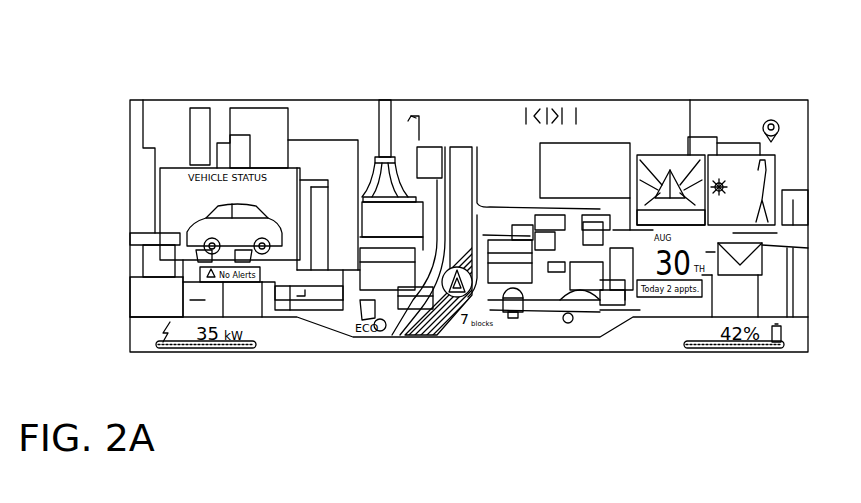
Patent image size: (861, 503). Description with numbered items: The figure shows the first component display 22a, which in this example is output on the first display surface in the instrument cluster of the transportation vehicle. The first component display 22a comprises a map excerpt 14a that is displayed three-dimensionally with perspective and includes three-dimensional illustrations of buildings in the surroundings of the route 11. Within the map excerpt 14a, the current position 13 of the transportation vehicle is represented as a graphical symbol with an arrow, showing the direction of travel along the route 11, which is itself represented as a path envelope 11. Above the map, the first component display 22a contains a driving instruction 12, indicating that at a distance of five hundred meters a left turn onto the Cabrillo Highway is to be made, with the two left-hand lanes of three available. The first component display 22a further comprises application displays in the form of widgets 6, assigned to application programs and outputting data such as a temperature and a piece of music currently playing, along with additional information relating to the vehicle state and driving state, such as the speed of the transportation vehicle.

The first component display 22a is at (131, 100).
The map excerpt 14a is at (355, 165).
The driving instruction 12 is at (436, 104).
The route 11 is at (481, 200).
The widgets 6 is at (730, 145).
The current position 13 is at (475, 294).